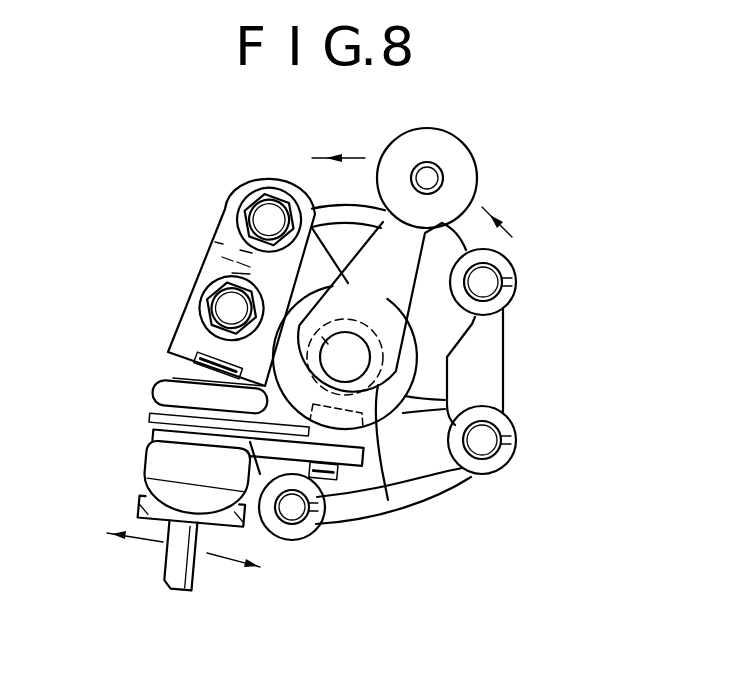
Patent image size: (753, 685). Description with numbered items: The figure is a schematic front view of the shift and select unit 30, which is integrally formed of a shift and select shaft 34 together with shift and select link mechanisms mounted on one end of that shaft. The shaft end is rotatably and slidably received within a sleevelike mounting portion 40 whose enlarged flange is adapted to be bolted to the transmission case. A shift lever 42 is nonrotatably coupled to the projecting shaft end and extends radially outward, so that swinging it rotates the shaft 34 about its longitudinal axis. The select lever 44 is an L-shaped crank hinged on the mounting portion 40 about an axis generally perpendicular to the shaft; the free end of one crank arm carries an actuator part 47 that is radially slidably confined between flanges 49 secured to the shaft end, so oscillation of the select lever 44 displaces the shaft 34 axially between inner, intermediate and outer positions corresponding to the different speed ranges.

The shift and select unit 30 is at (537, 128).
The shift and select shaft 34 is at (348, 378).
The sleevelike mounting portion 40 is at (485, 393).
The shift lever 42 is at (377, 293).
The select lever 44 is at (217, 272).
The actuator part 47 is at (353, 383).
The flanges 49 is at (182, 418).